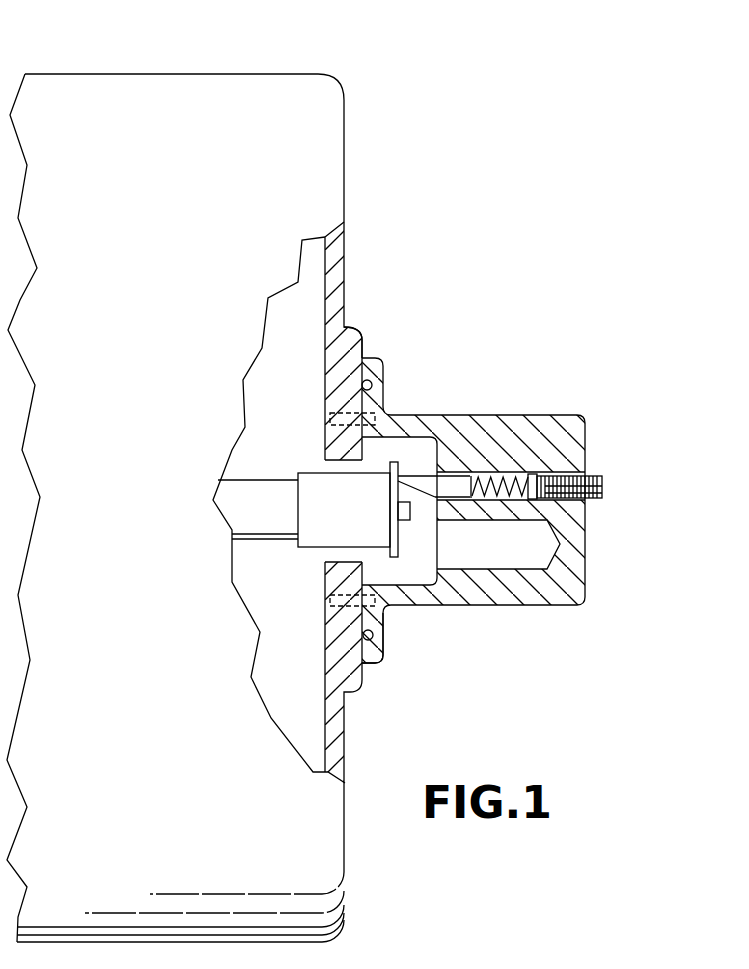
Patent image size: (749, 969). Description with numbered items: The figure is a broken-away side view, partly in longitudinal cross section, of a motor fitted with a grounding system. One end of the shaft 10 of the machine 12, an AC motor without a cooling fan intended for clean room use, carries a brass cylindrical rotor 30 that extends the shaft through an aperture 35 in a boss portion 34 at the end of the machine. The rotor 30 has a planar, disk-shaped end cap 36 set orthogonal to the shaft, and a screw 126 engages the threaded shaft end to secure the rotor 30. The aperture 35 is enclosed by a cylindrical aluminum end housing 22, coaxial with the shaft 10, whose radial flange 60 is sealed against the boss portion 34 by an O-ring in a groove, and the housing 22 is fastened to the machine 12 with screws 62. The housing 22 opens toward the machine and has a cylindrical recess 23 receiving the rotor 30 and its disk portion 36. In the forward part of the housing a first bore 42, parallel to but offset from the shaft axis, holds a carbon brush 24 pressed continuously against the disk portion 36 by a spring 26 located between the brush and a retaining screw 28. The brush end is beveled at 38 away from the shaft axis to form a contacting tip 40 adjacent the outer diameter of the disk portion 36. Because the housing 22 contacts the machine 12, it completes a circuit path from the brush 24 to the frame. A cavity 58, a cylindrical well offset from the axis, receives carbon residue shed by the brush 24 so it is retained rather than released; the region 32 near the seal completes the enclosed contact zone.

The shaft 10 is at (253, 538).
The machine 12 is at (252, 74).
The end housing 22 is at (519, 648).
The cylindrical recess 23 is at (340, 572).
The carbon brush 24 is at (440, 470).
The spring 26 is at (527, 476).
The retaining screw 28 is at (603, 488).
The rotor 30 is at (307, 473).
The seal ring 32 is at (372, 637).
The boss portion 34 is at (363, 345).
The aperture 35 is at (345, 560).
The end cap 36 is at (412, 592).
The bevel 38 is at (398, 481).
The contacting tip 40 is at (410, 468).
The first bore 42 is at (470, 483).
The cavity 58 is at (565, 548).
The radial flange 60 is at (382, 380).
The screws 62 is at (340, 615).
The screw 126 is at (400, 518).